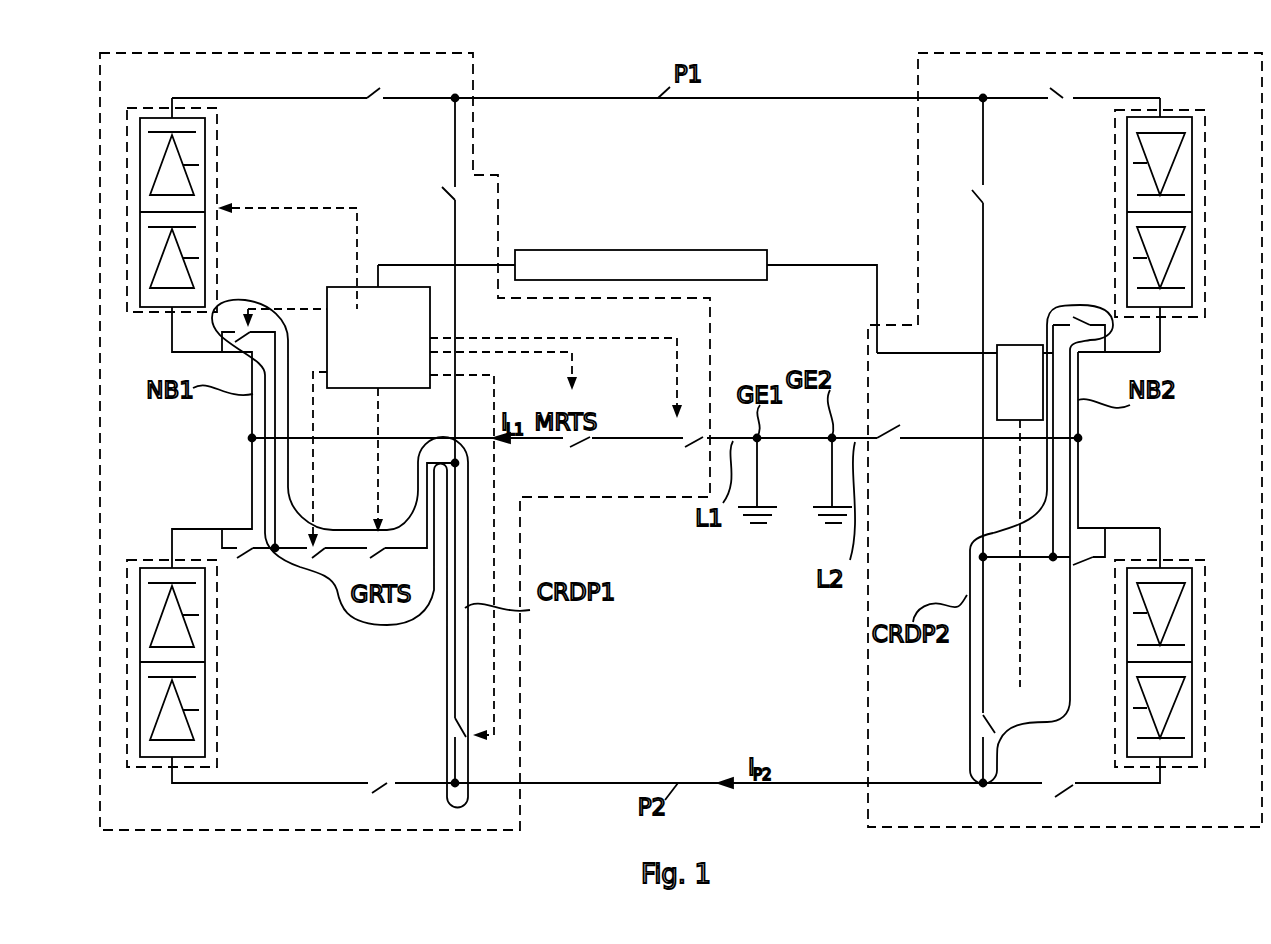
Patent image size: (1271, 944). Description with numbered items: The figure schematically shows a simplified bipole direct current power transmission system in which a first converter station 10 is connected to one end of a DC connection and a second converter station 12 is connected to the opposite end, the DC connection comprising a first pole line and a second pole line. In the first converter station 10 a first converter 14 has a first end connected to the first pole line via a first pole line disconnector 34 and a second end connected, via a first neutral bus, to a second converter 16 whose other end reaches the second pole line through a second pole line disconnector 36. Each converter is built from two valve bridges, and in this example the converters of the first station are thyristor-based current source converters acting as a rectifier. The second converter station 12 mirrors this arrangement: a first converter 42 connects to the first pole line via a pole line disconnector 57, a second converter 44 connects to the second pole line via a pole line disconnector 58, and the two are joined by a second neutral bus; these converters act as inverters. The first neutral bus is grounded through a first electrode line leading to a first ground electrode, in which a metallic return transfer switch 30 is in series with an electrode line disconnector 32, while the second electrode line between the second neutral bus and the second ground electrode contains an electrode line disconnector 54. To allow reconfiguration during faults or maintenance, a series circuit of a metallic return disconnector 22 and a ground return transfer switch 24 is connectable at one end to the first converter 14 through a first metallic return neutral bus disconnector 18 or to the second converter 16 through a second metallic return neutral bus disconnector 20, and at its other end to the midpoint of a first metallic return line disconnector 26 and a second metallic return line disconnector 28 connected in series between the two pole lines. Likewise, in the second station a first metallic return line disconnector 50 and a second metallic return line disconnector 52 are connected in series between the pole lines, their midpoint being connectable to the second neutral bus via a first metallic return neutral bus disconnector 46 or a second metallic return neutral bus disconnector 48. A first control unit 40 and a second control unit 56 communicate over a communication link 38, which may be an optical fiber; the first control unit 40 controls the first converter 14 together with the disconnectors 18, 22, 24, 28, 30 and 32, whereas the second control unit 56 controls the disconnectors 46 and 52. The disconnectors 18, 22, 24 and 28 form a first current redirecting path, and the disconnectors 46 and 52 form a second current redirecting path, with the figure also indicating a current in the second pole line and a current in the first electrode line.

The first converter station 10 is at (475, 63).
The second converter station 12 is at (912, 68).
The first converter 14 is at (216, 192).
The second converter 16 is at (216, 714).
The first metallic return neutral bus disconnector 18 is at (244, 427).
The second metallic return neutral bus disconnector 20 is at (238, 572).
The metallic return disconnector 22 is at (302, 572).
The ground return transfer switch 24 is at (370, 564).
The first metallic return line disconnector 26 is at (430, 280).
The second metallic return line disconnector 28 is at (439, 623).
The metallic return transfer switch 30 is at (575, 461).
The electrode line disconnector 32 is at (688, 461).
The first pole line disconnector 34 is at (378, 78).
The second pole line disconnector 36 is at (372, 773).
The communication link 38 is at (615, 250).
The first control unit 40 is at (450, 471).
The first converter 42 is at (1205, 177).
The second converter 44 is at (1205, 627).
The first metallic return neutral bus disconnector 46 is at (1033, 345).
The second metallic return neutral bus disconnector 48 is at (1044, 563).
The first metallic return line disconnector 50 is at (959, 327).
The second metallic return line disconnector 52 is at (985, 702).
The electrode line disconnector 54 is at (887, 448).
The second control unit 56 is at (965, 516).
The pole line disconnector 57 is at (1049, 78).
The pole line disconnector 58 is at (1056, 806).